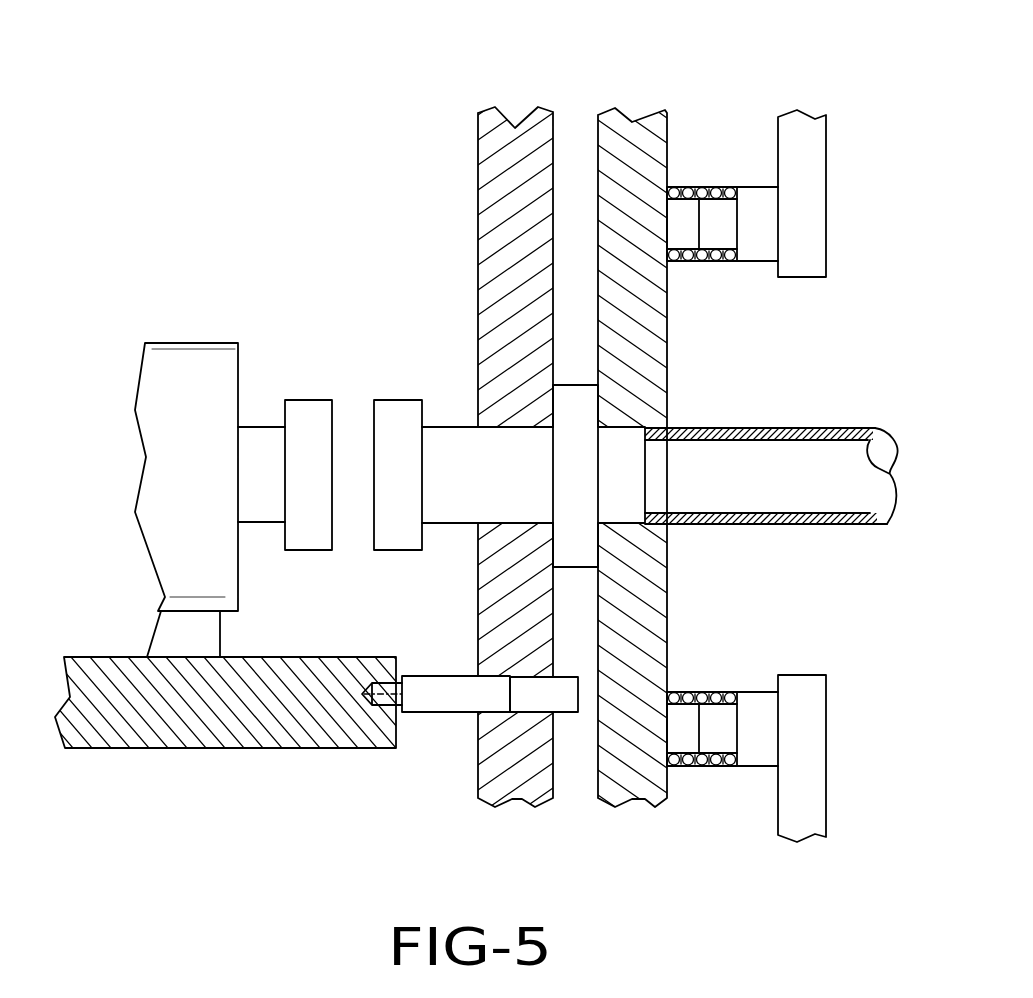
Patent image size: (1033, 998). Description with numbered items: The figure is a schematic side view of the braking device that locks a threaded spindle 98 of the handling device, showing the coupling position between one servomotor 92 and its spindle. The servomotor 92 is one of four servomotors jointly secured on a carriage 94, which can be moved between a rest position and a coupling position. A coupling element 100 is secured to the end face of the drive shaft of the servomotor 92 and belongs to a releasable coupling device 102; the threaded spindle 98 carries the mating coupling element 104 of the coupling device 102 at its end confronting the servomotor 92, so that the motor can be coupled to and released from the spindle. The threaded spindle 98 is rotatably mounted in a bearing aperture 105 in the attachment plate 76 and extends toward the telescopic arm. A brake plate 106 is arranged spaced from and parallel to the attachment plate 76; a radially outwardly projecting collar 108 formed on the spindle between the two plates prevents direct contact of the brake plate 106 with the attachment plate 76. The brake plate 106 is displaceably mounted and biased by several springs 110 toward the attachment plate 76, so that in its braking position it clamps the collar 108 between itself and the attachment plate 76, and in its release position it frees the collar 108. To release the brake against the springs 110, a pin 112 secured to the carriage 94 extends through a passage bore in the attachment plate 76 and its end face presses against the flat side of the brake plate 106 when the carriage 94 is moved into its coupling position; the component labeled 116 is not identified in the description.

The attachment plate 76 is at (513, 128).
The brake plate 106 is at (630, 130).
The springs 110 is at (706, 190).
The servomotor 92 is at (195, 352).
The coupling device 102 is at (273, 265).
The coupling element 100 is at (297, 414).
The coupling element 104 is at (404, 414).
The bearing aperture 105 is at (515, 523).
The collar 108 is at (582, 505).
The threaded spindle 98 is at (755, 470).
The carriage 94 is at (273, 712).
The pin 112 is at (432, 700).
The spacer block 116 is at (515, 692).